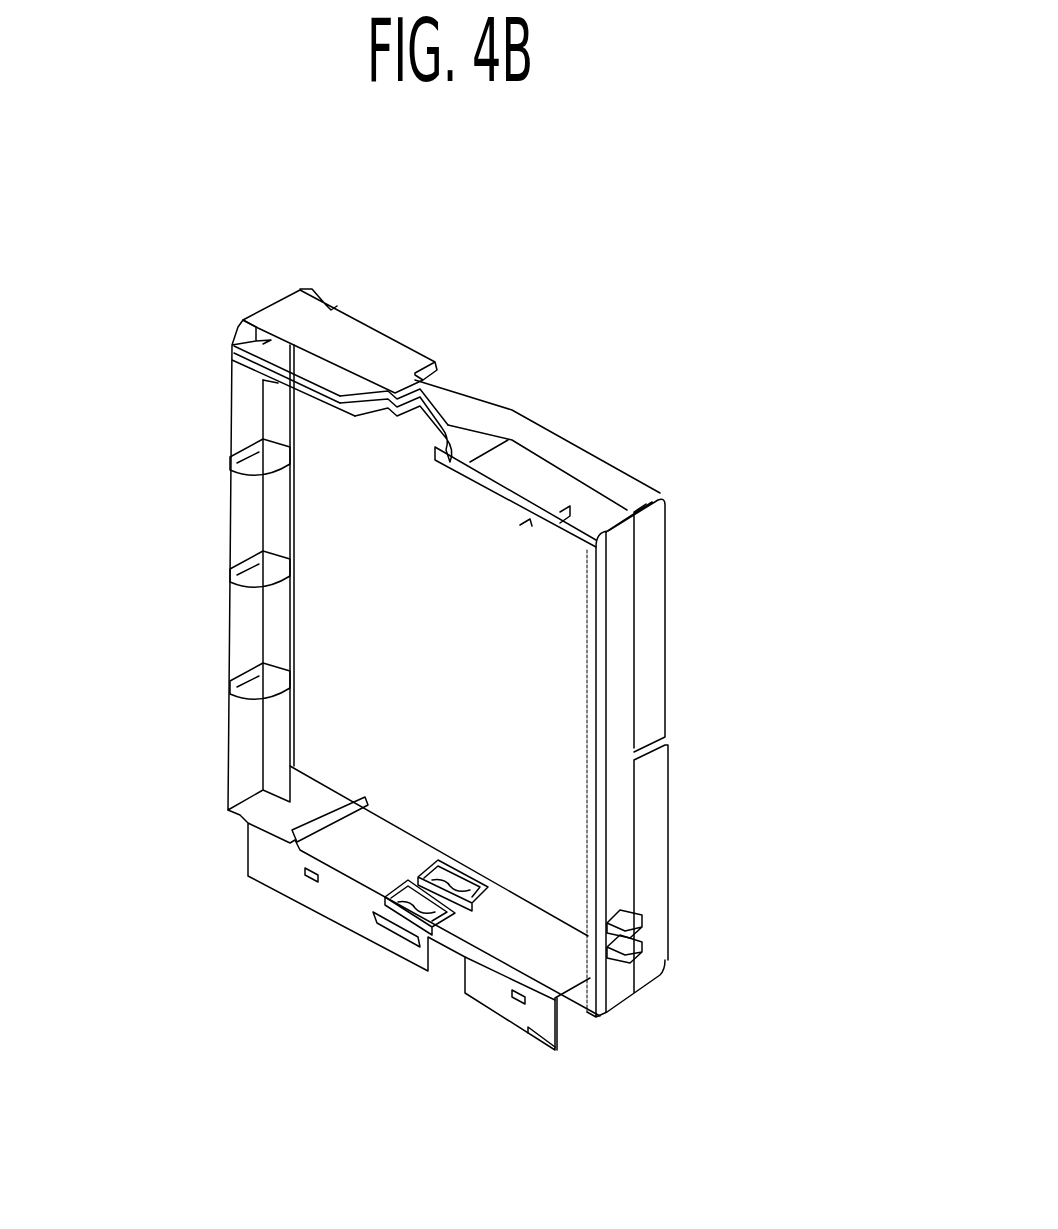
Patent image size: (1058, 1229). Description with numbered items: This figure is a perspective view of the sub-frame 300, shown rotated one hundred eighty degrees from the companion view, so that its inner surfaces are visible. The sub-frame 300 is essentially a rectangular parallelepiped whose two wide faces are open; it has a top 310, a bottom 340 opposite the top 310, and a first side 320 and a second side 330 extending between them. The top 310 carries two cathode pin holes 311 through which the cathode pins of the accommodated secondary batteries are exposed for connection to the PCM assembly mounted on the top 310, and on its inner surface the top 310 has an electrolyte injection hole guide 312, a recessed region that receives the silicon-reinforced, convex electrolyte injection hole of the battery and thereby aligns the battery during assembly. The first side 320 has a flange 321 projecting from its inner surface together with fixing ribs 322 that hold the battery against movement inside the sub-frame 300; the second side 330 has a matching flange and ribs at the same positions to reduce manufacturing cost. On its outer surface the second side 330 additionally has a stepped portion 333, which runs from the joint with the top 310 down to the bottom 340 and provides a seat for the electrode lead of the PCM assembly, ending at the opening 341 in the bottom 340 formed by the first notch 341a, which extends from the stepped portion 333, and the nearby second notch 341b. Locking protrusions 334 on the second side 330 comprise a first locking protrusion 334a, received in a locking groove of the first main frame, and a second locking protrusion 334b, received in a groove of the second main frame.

The sub-frame 300 is at (676, 270).
The top 310 is at (276, 907).
The cathode pin holes 311 is at (495, 890).
The electrolyte injection hole guide 312 is at (483, 912).
The first side 320 is at (226, 420).
The flange 321 is at (277, 620).
The fixing ribs 322 is at (236, 682).
The second side 330 is at (688, 782).
The stepped portion 333 is at (598, 472).
The locking protrusions 334 is at (798, 892).
The first locking protrusion 334a is at (642, 945).
The second locking protrusion 334b is at (642, 912).
The bottom 340 is at (355, 333).
The opening (notches) 341 is at (592, 266).
The first notch 341a is at (472, 396).
The second notch 341b is at (515, 406).